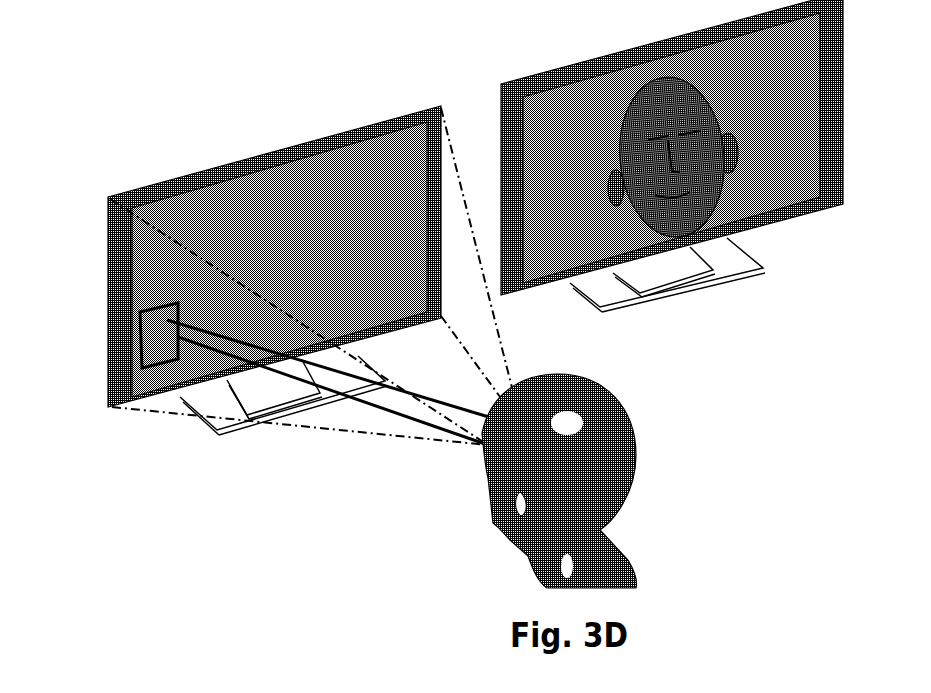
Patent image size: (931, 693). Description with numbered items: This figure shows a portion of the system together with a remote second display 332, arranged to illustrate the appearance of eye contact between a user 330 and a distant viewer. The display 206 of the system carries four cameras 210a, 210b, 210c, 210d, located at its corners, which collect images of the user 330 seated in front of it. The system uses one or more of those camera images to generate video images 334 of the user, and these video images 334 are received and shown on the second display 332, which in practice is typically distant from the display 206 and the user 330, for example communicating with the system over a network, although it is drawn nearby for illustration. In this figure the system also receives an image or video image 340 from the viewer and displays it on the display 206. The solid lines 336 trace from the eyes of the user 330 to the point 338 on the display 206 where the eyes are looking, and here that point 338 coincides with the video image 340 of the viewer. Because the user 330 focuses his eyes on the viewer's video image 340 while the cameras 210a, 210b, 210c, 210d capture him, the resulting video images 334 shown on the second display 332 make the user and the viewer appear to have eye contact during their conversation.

The display 206 is at (237, 160).
The camera 210a is at (118, 196).
The camera 210b is at (441, 108).
The camera 210c is at (443, 317).
The camera 210d is at (116, 407).
The user 330 is at (487, 478).
The second display 332 is at (801, 220).
The video images 334 is at (657, 83).
The solid lines 336 is at (437, 402).
The point 338 is at (140, 313).
The video image 340 is at (140, 343).